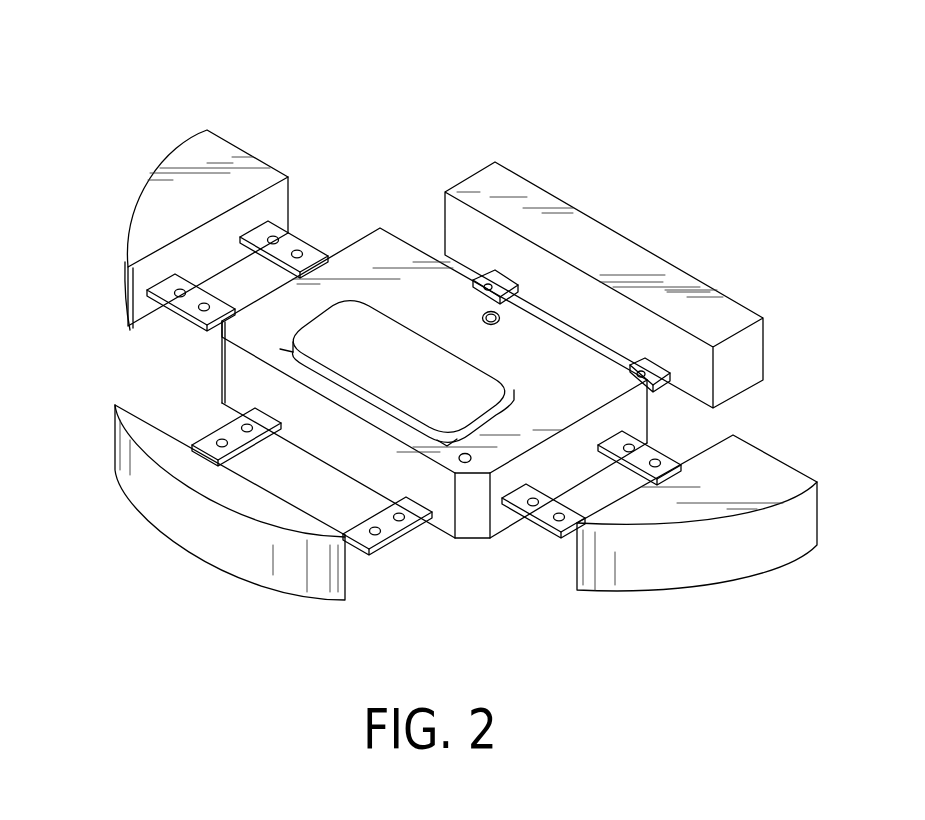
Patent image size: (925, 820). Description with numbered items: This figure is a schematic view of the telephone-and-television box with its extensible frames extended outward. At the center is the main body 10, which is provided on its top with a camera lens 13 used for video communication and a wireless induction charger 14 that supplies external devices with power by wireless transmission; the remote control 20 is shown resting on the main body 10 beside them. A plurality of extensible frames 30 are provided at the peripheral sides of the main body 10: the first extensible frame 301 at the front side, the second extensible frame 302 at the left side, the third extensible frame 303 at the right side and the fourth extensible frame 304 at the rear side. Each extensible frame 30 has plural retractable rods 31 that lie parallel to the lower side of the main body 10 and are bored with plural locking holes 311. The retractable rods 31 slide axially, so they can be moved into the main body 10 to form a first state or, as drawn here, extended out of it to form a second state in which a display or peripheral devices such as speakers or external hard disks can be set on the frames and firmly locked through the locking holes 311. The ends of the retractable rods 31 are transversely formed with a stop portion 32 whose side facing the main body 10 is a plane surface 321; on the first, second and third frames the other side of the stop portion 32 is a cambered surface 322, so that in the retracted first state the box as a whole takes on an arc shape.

The main body 10 is at (587, 333).
The camera lens 13 is at (491, 310).
The wireless induction charger 14 is at (283, 342).
The remote control 20 is at (354, 284).
The extensible frame 30 is at (204, 166).
The first extensible frame 301 is at (265, 549).
The second extensible frame 302 is at (201, 152).
The third extensible frame 303 is at (765, 460).
The fourth extensible frame 304 is at (668, 278).
The retractable rod 31 is at (166, 288).
The locking hole 311 is at (562, 519).
The stop portion 32 is at (177, 197).
The plane surface 321 is at (277, 200).
The cambered surface 322 is at (128, 310).